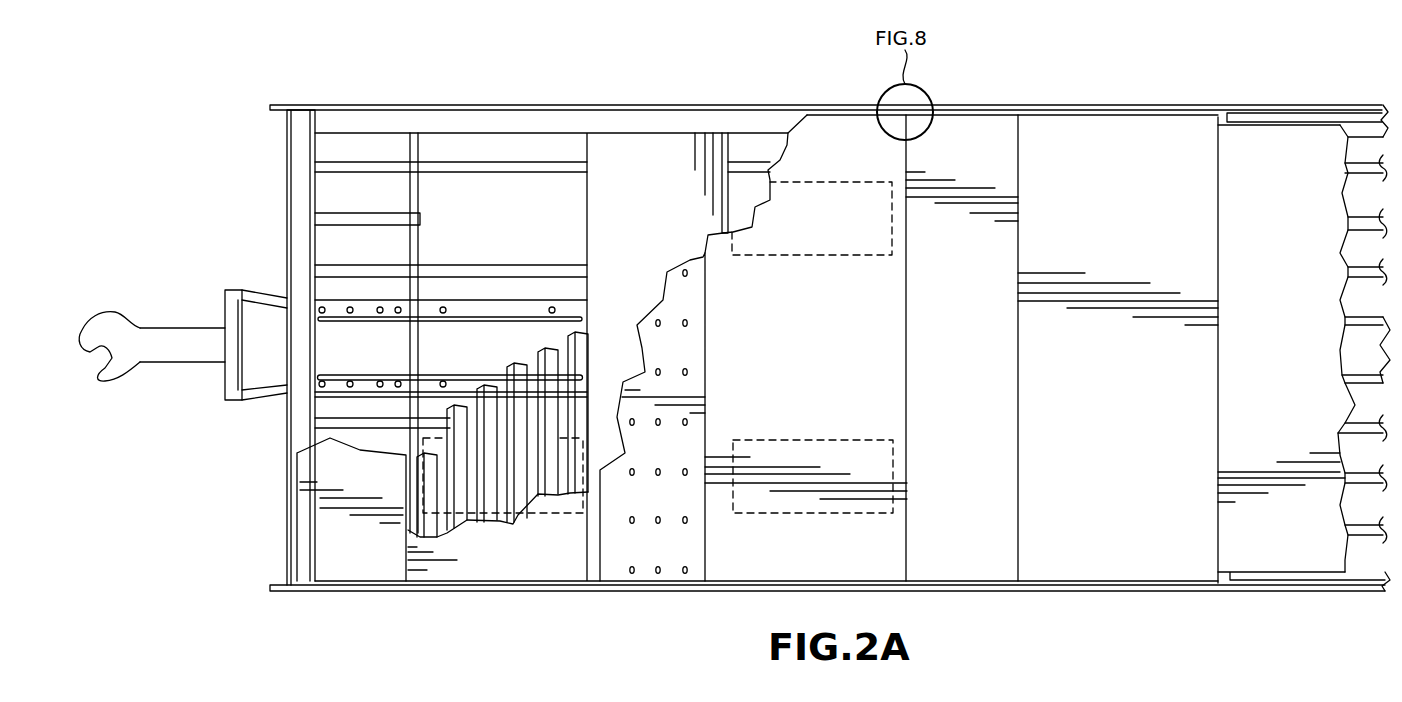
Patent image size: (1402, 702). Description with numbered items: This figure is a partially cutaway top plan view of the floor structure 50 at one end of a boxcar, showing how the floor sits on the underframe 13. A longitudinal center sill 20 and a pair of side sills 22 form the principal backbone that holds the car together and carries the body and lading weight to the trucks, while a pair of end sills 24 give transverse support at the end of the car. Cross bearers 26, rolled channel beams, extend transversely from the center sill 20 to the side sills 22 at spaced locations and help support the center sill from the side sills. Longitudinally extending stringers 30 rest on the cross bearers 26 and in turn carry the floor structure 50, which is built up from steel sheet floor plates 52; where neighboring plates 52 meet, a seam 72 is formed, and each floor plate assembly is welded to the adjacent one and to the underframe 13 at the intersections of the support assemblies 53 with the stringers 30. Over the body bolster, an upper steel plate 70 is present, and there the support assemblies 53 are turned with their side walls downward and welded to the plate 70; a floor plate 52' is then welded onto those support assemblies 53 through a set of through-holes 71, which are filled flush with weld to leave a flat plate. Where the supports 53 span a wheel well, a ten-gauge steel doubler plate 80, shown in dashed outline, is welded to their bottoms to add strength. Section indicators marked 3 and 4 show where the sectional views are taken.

The section line 3- 3 is at (880, 197).
The section line 4- 4 is at (1080, 72).
The underframe 13 is at (248, 181).
The center sill 20 is at (338, 345).
The side sills 22 is at (563, 115).
The end sills 24 is at (290, 135).
The cross bearers 26 is at (410, 193).
The stringers 30 is at (457, 263).
The floor structure 50 is at (1235, 72).
The floor plates 52 is at (843, 345).
The floor plate 52' is at (652, 449).
The floor plate support assemblies 53 is at (460, 400).
The upper steel plate 70 is at (638, 140).
The through-holes 71 is at (690, 323).
The seam 72 is at (906, 393).
The doubler plate 80 is at (565, 513).